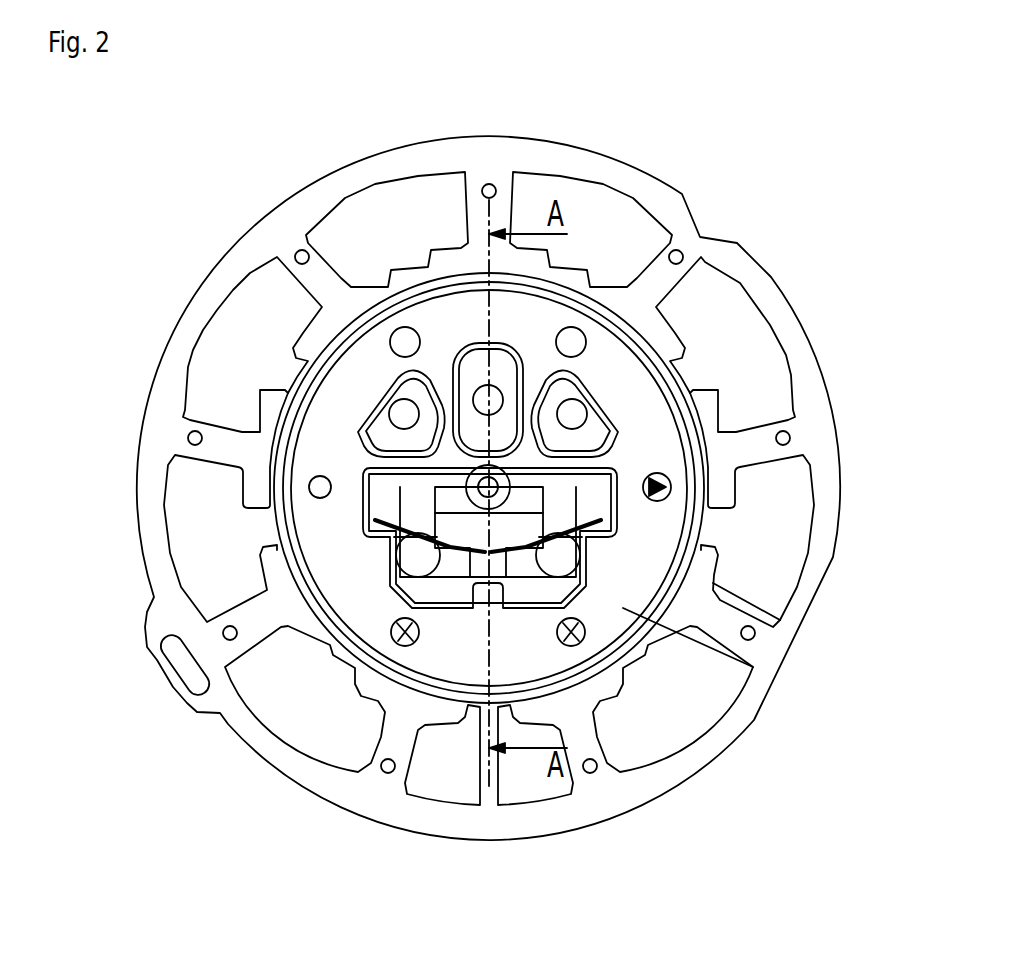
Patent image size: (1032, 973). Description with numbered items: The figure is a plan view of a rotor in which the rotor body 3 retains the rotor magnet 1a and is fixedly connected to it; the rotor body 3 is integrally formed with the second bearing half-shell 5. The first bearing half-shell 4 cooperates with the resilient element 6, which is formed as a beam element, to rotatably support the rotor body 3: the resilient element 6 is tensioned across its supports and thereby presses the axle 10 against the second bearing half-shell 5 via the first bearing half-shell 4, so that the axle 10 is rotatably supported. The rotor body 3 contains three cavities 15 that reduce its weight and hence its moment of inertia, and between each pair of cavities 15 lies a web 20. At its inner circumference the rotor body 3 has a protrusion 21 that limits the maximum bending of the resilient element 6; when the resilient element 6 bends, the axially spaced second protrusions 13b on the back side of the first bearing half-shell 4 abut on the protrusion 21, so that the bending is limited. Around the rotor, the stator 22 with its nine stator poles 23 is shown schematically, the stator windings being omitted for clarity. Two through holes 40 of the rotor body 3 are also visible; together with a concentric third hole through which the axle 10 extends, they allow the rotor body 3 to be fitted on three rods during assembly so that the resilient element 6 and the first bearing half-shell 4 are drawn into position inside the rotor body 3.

The rotor magnet 1a is at (285, 522).
The rotor body 3 is at (700, 610).
The first bearing half-shell 4 is at (577, 592).
The second bearing half-shell 5 is at (527, 460).
The resilient element 6 is at (363, 467).
The axle 10 is at (530, 487).
The second protrusions 13b is at (397, 583).
The cavities 15 is at (560, 395).
The web 20 is at (448, 410).
The protrusion 21 is at (484, 560).
The stator 22 is at (697, 757).
The stator poles 23 is at (400, 728).
The through holes 40 is at (290, 562).